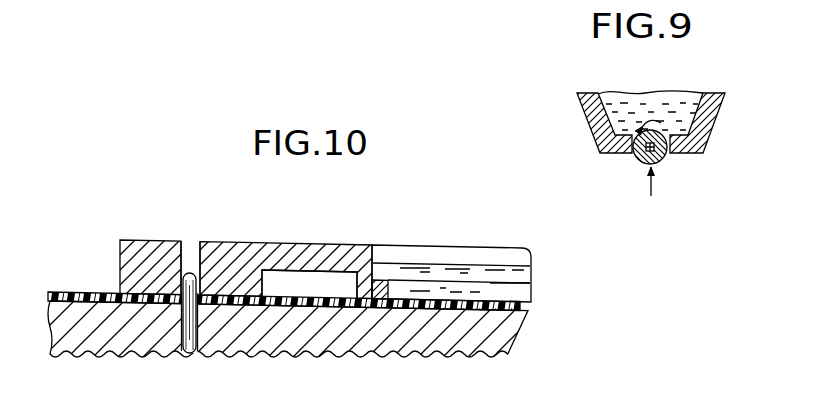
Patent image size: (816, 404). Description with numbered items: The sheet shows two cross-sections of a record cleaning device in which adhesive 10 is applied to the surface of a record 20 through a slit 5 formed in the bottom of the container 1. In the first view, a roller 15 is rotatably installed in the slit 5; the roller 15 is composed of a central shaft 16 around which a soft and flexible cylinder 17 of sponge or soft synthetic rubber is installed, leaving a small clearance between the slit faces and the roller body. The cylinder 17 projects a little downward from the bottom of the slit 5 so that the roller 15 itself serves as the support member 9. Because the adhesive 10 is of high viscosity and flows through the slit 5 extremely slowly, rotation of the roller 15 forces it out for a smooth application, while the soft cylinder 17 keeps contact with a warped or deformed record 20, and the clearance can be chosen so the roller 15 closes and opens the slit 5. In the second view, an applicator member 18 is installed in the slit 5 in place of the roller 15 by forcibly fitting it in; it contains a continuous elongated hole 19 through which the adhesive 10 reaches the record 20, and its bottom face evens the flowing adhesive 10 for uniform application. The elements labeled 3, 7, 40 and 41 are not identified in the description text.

In FIG. 9, the container 1 is at (586, 135).
In FIG. 10, the container 1 is at (405, 246).
In FIG. 10, the cover block 3 is at (323, 242).
In FIG. 9, the slit 5 is at (633, 132).
In FIG. 10, the slot 7 is at (190, 253).
In FIG. 10, the support member 9 is at (275, 269).
In FIG. 9, the adhesive 10 is at (683, 103).
In FIG. 10, the adhesive 10 is at (438, 270).
In FIG. 9, the roller 15 is at (654, 194).
In FIG. 9, the central shaft 16 is at (661, 157).
In FIG. 9, the soft and flexible cylinder 17 is at (637, 158).
In FIG. 10, the applicator member 18 is at (488, 283).
In FIG. 10, the continuous elongated hole 19 is at (455, 287).
In FIG. 10, the record 20 is at (521, 302).
In FIG. 10, the substrate 40 is at (408, 323).
In FIG. 10, the pin 41 is at (197, 338).